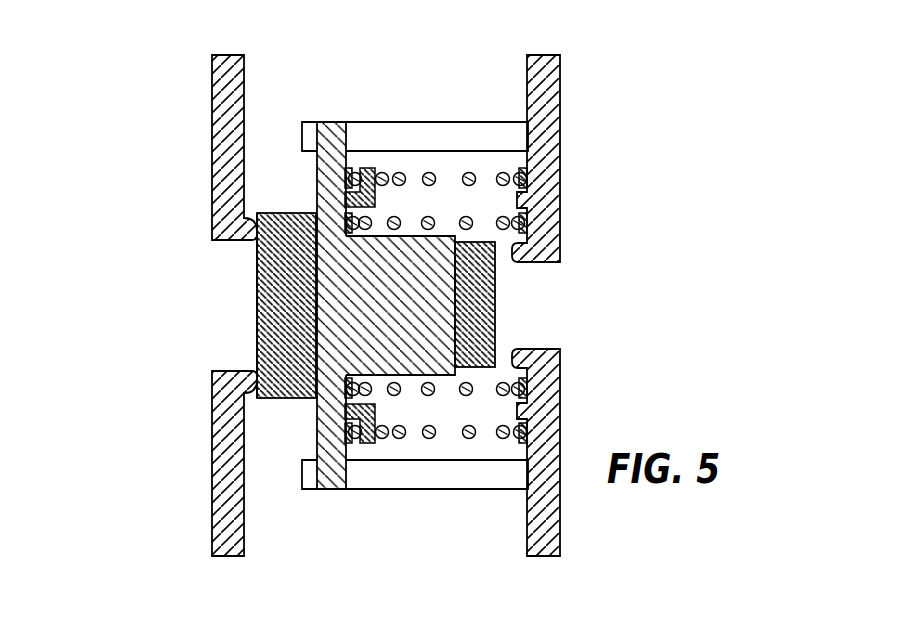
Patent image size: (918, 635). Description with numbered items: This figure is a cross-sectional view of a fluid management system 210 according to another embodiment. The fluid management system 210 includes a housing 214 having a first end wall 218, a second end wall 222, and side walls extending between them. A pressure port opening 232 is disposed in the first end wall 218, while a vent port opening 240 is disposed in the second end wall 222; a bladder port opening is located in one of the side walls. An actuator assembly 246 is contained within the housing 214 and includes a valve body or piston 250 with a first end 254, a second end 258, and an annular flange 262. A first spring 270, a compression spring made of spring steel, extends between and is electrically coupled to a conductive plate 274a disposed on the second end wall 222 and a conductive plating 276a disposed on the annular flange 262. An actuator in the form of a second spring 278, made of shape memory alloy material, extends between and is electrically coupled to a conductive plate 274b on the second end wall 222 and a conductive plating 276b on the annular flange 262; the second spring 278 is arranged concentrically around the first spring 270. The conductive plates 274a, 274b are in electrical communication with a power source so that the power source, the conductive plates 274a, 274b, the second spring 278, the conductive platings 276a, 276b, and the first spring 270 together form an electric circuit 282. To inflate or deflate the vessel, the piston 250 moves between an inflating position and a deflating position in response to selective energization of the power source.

The fluid management system 210 is at (172, 48).
The housing 214 is at (195, 523).
The first end wall 218 is at (212, 102).
The second end wall 222 is at (562, 112).
The pressure port opening 232 is at (238, 298).
The vent port opening 240 is at (545, 297).
The actuator assembly 246 is at (393, 167).
The piston 250 is at (428, 250).
The first end 254 is at (257, 335).
The second end 258 is at (498, 313).
The annular flange 262 is at (330, 142).
The first spring 270 is at (503, 398).
The conductive plate 274a is at (528, 179).
The conductive plate 274b is at (528, 222).
The conductive plating 276a is at (343, 180).
The conductive plating 276b is at (343, 222).
The second spring 278 is at (505, 153).
The electric circuit 282 is at (422, 402).